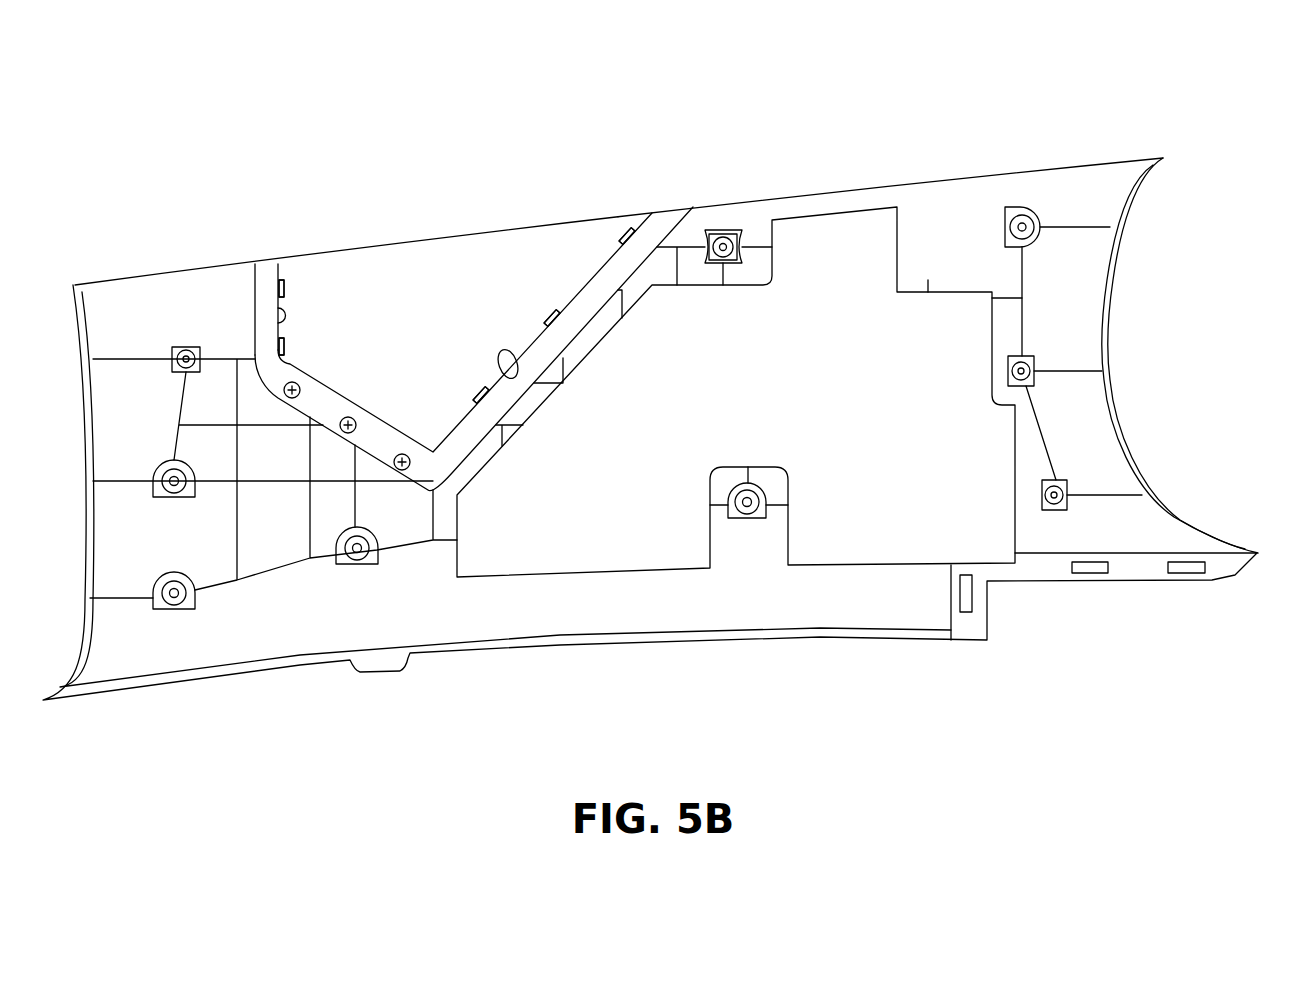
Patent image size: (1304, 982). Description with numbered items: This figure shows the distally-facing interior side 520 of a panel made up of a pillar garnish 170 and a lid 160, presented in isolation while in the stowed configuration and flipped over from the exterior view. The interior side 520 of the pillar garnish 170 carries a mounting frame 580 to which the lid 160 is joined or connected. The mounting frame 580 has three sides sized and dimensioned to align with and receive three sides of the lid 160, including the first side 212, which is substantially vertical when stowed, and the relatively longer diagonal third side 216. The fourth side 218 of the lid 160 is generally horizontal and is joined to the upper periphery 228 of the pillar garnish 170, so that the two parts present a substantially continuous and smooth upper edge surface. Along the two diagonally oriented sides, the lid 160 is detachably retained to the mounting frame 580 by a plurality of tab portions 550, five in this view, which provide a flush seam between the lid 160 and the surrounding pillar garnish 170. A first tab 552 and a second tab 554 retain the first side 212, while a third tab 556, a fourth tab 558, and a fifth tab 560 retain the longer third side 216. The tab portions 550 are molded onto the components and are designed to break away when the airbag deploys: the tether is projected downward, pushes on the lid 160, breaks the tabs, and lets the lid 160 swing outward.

The lid 160 is at (390, 414).
The pillar garnish 170 is at (826, 394).
The first side 212 is at (274, 320).
The third side 216 is at (518, 377).
The fourth side 218 is at (432, 243).
The upper periphery 228 is at (843, 196).
The interior side 520 is at (1085, 291).
The tab portions 550 is at (286, 284).
The first tab 552 is at (287, 291).
The second tab 554 is at (288, 350).
The third tab 556 is at (478, 392).
The fourth tab 558 is at (557, 315).
The fifth tab 560 is at (621, 233).
The mounting frame 580 is at (268, 297).